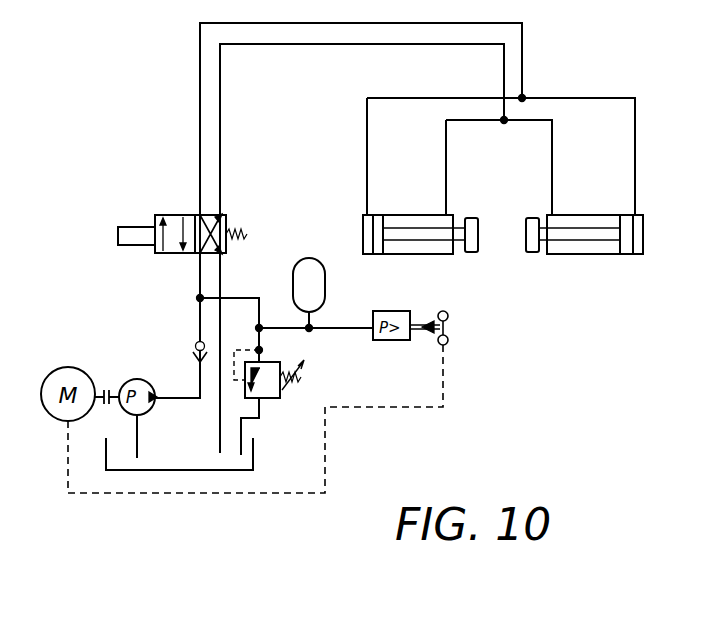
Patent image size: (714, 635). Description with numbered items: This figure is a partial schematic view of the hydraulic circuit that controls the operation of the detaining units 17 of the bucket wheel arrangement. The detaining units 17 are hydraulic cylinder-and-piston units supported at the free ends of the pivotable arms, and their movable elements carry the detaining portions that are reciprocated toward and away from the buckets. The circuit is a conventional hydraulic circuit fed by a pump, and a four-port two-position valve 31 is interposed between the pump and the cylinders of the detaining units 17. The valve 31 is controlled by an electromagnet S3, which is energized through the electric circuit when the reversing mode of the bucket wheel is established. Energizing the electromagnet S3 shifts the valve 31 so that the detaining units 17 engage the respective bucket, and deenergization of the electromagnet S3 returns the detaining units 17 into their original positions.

The four-port two-position valve 31 is at (232, 208).
The detaining units 17 is at (503, 248).
The electromagnet S3 is at (136, 236).